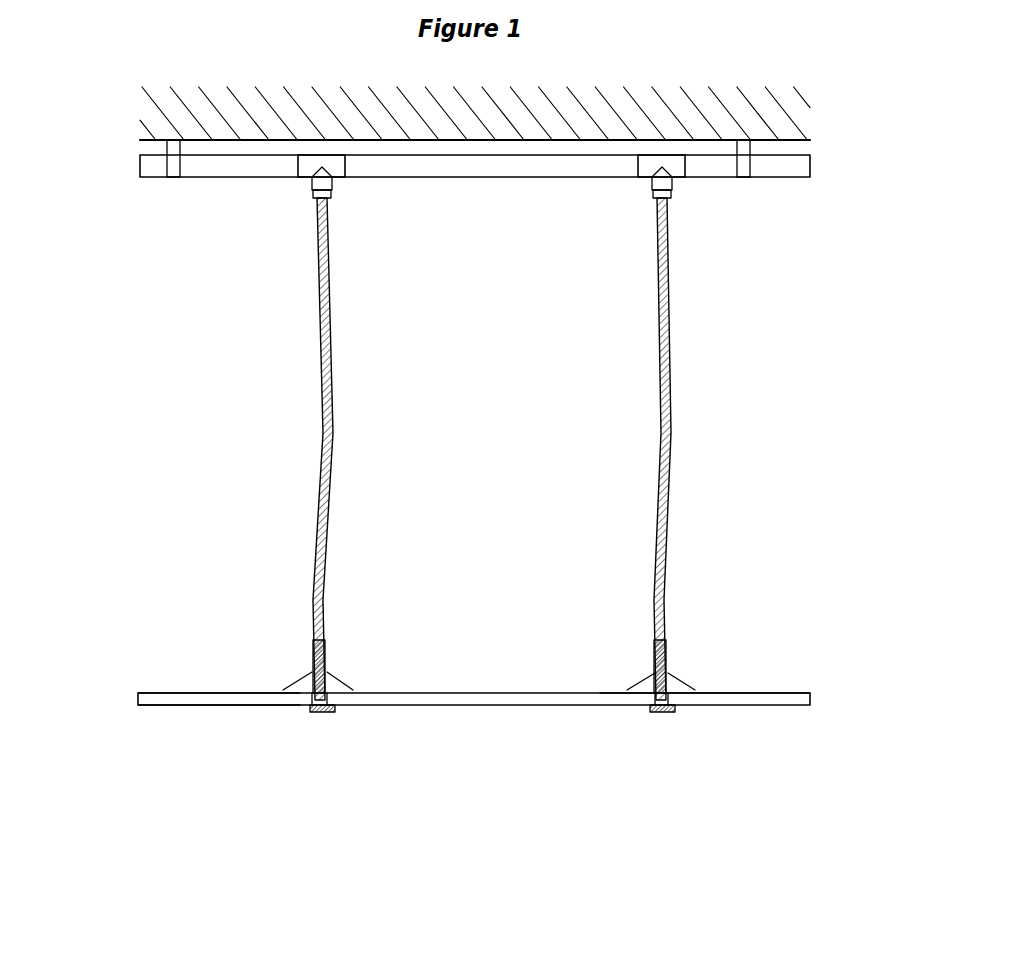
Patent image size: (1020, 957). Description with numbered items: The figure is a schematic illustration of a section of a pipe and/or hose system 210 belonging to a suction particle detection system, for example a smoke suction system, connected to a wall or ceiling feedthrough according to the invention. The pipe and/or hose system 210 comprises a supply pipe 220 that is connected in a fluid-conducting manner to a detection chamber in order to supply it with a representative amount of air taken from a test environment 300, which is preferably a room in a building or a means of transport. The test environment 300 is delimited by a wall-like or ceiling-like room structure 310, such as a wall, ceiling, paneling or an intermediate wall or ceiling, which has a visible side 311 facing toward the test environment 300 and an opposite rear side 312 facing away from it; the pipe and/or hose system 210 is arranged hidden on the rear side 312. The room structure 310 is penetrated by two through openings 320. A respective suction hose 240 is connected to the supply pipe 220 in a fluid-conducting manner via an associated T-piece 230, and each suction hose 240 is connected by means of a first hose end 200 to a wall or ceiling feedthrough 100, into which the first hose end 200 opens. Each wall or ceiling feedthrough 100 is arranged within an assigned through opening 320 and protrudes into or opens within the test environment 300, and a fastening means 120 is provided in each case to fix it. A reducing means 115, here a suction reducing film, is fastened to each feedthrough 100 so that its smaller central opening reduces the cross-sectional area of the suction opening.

The wall or ceiling feedthrough 100 is at (526, 638).
The reducing means 115 is at (553, 817).
The fastening means 120 is at (472, 763).
The first hose end 200 is at (440, 587).
The pipe and/or hose system 210 is at (411, 244).
The supply pipe 220 is at (501, 217).
The T-piece 230 is at (554, 232).
The suction hose 240 is at (553, 449).
The test environment 300 is at (512, 844).
The wall-like or ceiling-like room structure 310 is at (756, 634).
The visible side 311 is at (219, 772).
The rear side 312 is at (205, 629).
The through opening 320 is at (557, 748).